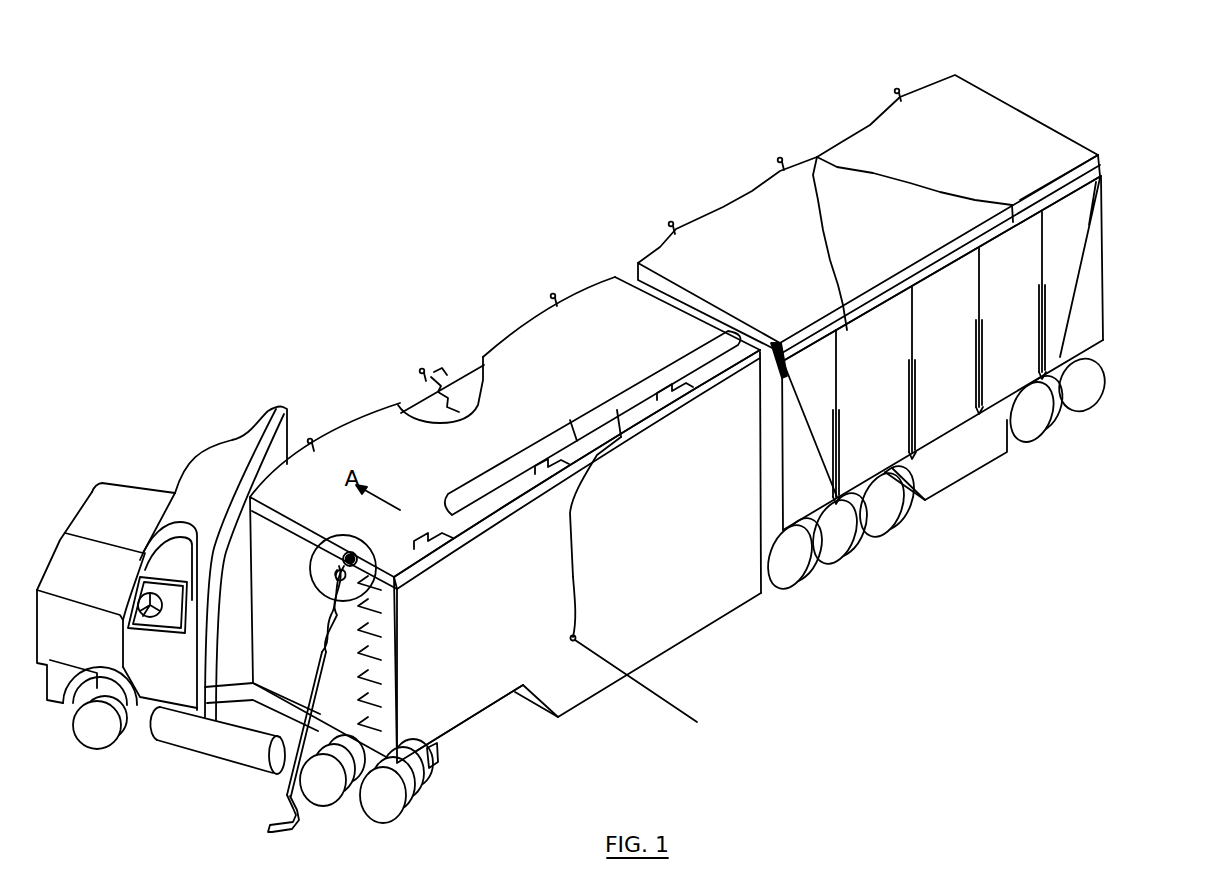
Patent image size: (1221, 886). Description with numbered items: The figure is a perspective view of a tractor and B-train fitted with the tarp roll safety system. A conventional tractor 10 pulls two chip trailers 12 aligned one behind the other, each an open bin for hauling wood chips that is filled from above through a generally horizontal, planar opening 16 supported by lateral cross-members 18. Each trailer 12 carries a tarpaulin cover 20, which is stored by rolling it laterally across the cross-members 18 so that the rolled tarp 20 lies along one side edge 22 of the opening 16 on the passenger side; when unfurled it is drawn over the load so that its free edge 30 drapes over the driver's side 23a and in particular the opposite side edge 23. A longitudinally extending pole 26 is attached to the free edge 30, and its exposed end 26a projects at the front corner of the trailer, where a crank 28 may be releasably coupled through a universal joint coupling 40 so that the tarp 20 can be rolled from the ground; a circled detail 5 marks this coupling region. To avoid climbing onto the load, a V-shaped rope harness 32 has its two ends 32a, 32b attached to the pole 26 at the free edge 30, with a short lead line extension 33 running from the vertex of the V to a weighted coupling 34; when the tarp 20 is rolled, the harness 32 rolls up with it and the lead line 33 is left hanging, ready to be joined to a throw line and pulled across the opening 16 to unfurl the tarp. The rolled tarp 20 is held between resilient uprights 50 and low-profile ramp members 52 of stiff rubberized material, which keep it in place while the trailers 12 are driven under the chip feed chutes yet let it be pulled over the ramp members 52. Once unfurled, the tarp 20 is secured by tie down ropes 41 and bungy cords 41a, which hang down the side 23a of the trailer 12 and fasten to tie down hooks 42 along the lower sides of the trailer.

The tractor 10 is at (188, 409).
The trailers 12 is at (421, 286).
The opening 16 is at (605, 435).
The lateral cross-members 18 is at (693, 386).
The tarpaulin cover 20 is at (614, 278).
The side edge 22 is at (412, 393).
The side edge 23 is at (478, 530).
The driver's side 23a is at (466, 632).
The pole 26 is at (1100, 174).
The exposed end of pole 26a is at (1100, 173).
The crank 28 is at (282, 795).
The free edge of tarp 30 is at (1106, 158).
The rope harness 32 is at (807, 196).
The harness end 32a is at (840, 333).
The harness end 32b is at (1013, 217).
The lead line extension 33 is at (578, 608).
The weighted coupling 34 is at (650, 692).
The universal joint coupling 40 is at (336, 572).
The tie down ropes 41 is at (835, 392).
The bungy cords 41a is at (837, 444).
The tie down hooks 42 is at (838, 497).
The detail circle 5 is at (311, 572).
The uprights 50 is at (418, 368).
The ramp members 52 is at (463, 372).